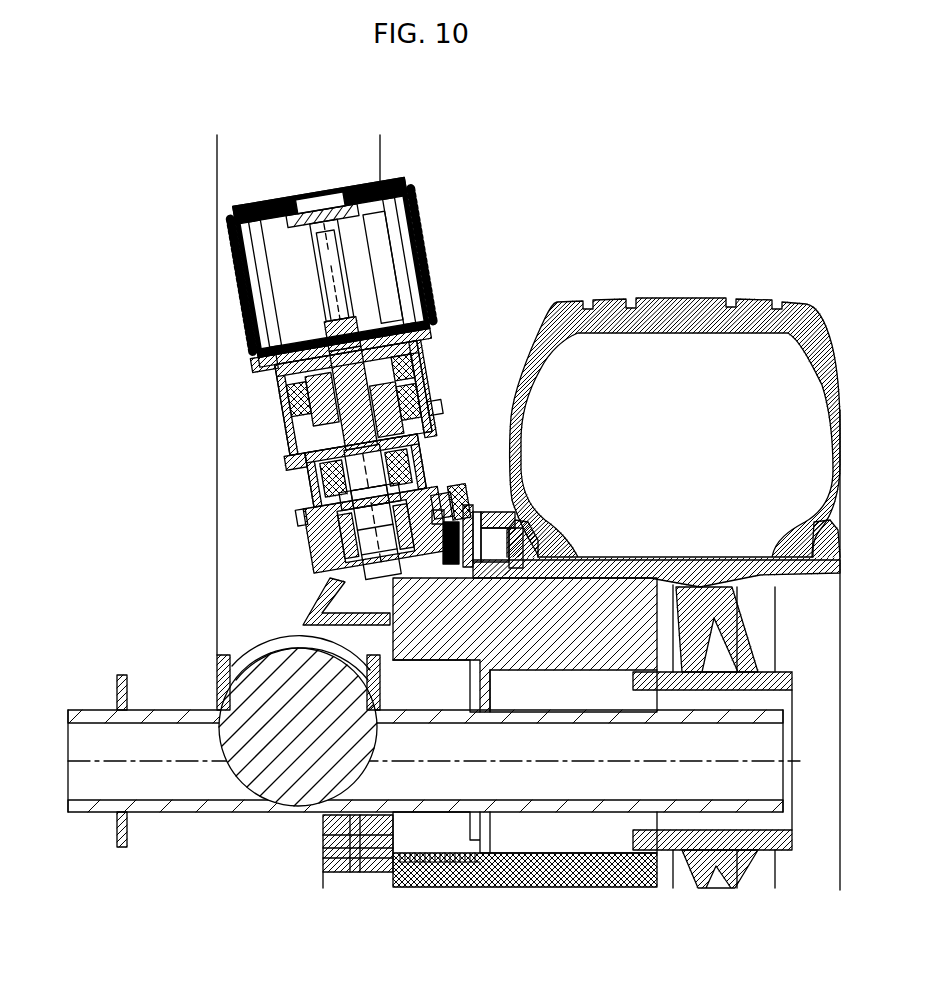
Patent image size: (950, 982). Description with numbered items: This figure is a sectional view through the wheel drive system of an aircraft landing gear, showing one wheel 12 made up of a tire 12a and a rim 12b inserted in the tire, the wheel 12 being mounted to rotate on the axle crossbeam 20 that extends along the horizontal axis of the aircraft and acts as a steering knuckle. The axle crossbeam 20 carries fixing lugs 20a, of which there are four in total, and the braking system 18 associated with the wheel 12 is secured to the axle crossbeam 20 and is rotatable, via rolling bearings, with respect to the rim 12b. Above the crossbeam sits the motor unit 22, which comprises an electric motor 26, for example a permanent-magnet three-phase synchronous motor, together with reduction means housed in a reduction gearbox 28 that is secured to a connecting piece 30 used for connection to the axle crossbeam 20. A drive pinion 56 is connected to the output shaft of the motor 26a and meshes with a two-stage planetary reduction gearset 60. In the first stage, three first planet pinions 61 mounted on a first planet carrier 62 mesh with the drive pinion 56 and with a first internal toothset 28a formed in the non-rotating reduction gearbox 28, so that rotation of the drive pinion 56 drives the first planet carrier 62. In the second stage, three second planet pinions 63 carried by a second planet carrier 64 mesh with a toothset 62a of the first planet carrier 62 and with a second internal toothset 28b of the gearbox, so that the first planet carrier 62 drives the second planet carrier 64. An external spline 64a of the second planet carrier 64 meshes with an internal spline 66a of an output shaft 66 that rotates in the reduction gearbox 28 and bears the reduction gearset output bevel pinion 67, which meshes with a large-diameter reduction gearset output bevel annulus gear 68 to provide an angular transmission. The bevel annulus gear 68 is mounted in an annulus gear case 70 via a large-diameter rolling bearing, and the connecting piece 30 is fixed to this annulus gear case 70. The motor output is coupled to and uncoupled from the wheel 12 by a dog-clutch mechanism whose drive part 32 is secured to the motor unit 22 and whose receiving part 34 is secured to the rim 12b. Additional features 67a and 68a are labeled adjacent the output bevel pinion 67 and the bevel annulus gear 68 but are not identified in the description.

The wheel 12 is at (757, 302).
The tire 12a is at (698, 325).
The rim 12b is at (815, 563).
The braking system 18 is at (556, 645).
The axle crossbeam 20 is at (162, 815).
The fixing lug 20a is at (373, 670).
The motor unit 22 is at (224, 318).
The electric motor 26 is at (425, 260).
The output shaft of the motor 26a is at (400, 293).
The reduction gearbox 28 is at (290, 440).
The first internal toothset 28a is at (268, 403).
The second internal toothset 28b is at (300, 460).
The connecting piece 30 is at (355, 872).
The drive part 32 is at (470, 528).
The receiving part 34 is at (480, 545).
The drive pinion 56 is at (410, 330).
The two-stage planetary reduction gearset 60 is at (283, 423).
The first planet pinion 61 is at (260, 358).
The first planet carrier 62 is at (400, 413).
The toothset of the first planet carrier 62a is at (403, 360).
The second planet pinion 63 is at (428, 407).
The second planet carrier 64 is at (412, 395).
The external spline 64a is at (345, 500).
The output shaft of the reduction gearset 66 is at (325, 518).
The internal spline 66a is at (333, 470).
The reduction gearset output bevel pinion 67 is at (335, 528).
The housing sleeve 67a is at (350, 520).
The reduction gearset output bevel annulus gear 68 is at (458, 503).
The cover flange 68a is at (443, 503).
The annulus gear case 70 is at (466, 515).